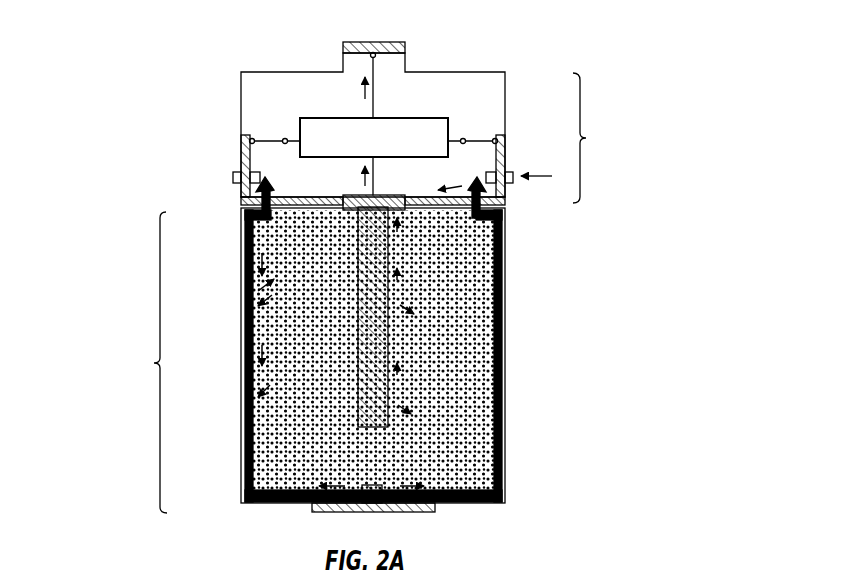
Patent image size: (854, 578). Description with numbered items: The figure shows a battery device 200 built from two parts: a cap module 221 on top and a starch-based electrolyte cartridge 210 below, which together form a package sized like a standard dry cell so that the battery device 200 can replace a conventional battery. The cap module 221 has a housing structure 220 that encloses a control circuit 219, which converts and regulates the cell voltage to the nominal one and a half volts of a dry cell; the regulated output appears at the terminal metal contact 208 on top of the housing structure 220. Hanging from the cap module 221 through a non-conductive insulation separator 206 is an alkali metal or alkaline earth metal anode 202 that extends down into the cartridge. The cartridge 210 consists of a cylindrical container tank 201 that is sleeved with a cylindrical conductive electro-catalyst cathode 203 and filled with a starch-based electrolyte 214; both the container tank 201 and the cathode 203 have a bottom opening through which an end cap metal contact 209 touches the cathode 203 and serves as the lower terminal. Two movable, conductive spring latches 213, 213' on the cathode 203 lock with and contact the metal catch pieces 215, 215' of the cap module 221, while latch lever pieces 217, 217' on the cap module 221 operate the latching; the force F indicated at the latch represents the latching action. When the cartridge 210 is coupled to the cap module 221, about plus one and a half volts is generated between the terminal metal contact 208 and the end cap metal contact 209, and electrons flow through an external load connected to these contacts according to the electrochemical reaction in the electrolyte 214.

The battery device 200 is at (115, 139).
The cylindrical container tank 201 is at (379, 355).
The alkali metal or alkaline earth metal anode 202 is at (389, 297).
The cylindrical conductive electro-catalyst cathode 203 is at (499, 333).
The non-conductive insulation separator 206 is at (330, 195).
The terminal metal contact 208 is at (406, 47).
The end cap metal contact 209 is at (435, 510).
The starch-based electrolyte cartridge 210 is at (145, 362).
The spring latch 213 is at (485, 220).
The spring latch 213' is at (258, 213).
The starch-based electrolyte 214 is at (251, 466).
The metal catch piece 215 is at (525, 197).
The metal catch piece 215' is at (218, 175).
The latch lever piece 217 is at (527, 166).
The latch lever piece 217' is at (216, 166).
The control circuit 219 is at (406, 118).
The housing structure 220 is at (483, 85).
The cap module 221 is at (596, 138).
The force F is at (544, 175).